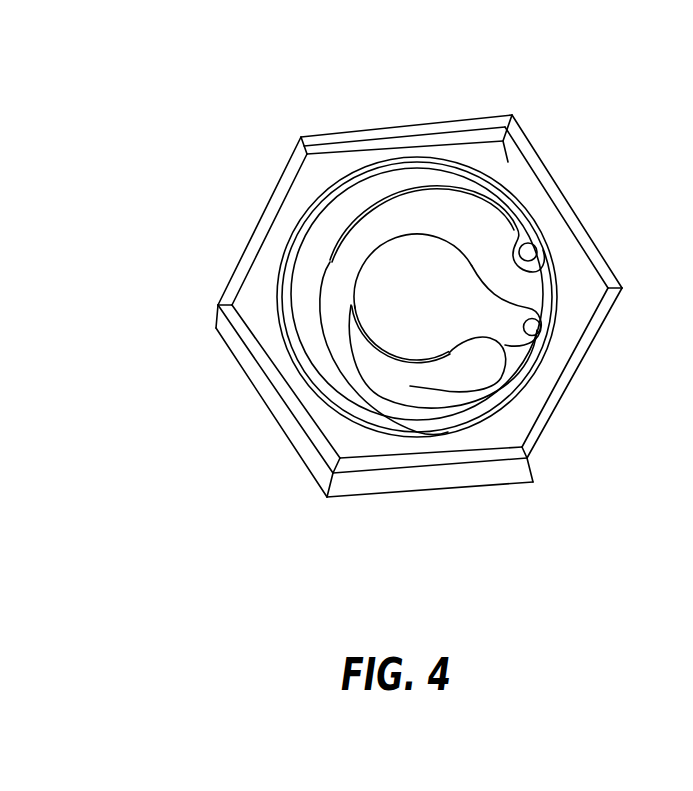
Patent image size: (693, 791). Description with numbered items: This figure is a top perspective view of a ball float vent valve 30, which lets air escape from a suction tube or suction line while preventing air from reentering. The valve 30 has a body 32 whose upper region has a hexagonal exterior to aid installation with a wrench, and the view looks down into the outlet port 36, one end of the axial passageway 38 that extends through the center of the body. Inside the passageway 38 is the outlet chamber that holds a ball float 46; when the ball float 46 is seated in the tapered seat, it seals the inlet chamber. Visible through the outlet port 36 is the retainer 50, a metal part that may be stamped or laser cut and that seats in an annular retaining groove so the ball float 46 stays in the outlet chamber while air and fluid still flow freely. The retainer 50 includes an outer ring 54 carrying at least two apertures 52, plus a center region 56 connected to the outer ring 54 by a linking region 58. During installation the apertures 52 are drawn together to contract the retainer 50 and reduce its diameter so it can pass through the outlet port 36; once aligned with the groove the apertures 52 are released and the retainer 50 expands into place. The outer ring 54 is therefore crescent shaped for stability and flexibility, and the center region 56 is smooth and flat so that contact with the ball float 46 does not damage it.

The ball float vent valve 30 is at (566, 80).
The body 32 is at (538, 470).
The outlet port 36 is at (307, 212).
The axial passageway 38 is at (325, 300).
The ball float 46 is at (483, 228).
The retainer 50 is at (410, 248).
The apertures 52 is at (532, 248).
The outer ring 54 is at (308, 262).
The center region 56 is at (393, 335).
The linking region 58 is at (510, 340).